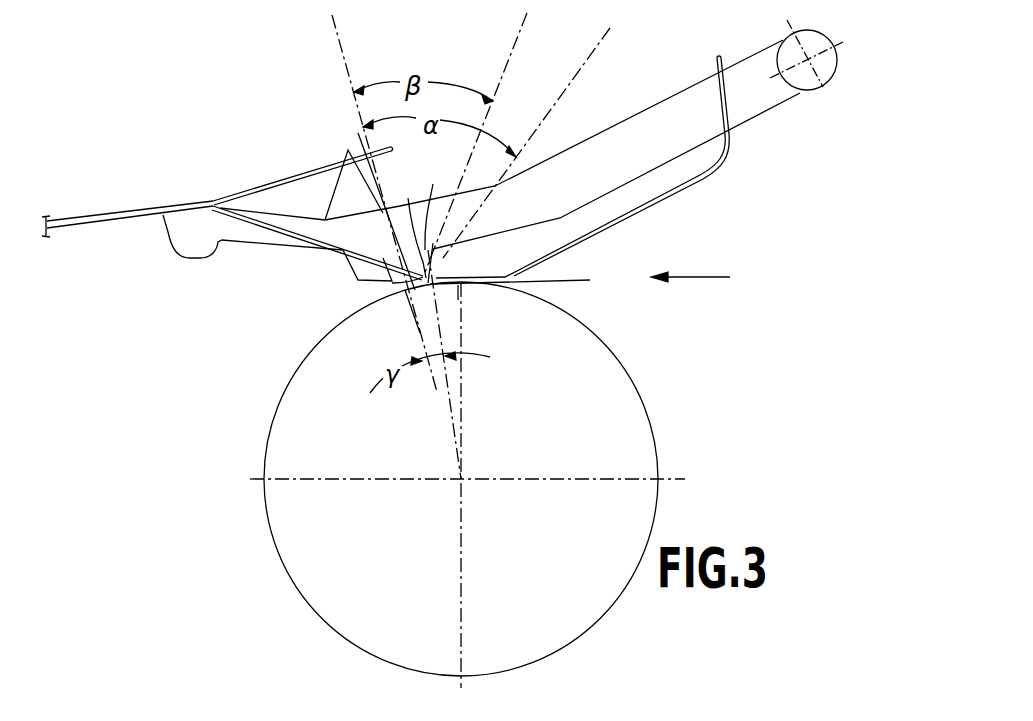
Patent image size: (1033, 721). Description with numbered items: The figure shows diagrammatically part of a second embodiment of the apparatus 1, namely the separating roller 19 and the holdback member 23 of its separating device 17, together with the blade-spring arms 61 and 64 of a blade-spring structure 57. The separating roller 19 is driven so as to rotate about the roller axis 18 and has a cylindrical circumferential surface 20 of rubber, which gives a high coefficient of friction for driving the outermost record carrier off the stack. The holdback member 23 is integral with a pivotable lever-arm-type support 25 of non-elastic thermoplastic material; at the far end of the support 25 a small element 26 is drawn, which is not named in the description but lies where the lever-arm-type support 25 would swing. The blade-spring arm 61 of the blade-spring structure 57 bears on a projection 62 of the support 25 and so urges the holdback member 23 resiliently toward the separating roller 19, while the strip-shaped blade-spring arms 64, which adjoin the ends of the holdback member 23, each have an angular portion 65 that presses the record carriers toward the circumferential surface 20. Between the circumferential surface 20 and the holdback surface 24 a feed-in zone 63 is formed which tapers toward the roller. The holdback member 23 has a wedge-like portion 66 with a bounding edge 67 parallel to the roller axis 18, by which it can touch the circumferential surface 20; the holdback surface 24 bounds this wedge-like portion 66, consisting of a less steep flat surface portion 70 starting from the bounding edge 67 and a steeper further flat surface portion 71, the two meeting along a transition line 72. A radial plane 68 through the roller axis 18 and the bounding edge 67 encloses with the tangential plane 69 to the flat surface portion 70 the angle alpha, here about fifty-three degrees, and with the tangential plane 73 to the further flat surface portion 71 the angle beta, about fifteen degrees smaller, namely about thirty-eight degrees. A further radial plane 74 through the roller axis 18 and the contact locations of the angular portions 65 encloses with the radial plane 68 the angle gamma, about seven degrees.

The apparatus 1 is at (178, 70).
The separating device 17 is at (758, 291).
The roller axis 18 is at (463, 483).
The separating roller 19 is at (467, 485).
The circumferential surface 20 is at (583, 322).
The holdback member 23 is at (360, 238).
The holdback surface 24 is at (440, 262).
The support 25 is at (670, 120).
The pivot axle 26 is at (800, 70).
The blade-spring structure 57 is at (152, 224).
The blade-spring arm 61 is at (358, 133).
The projection 62 is at (347, 160).
The feed-in zone 63 is at (558, 296).
The blade-spring arms 64 is at (703, 177).
The angular portion 65 is at (458, 287).
The wedge-like portion 66 is at (343, 266).
The bounding edge 67 is at (405, 298).
The radial plane 68 is at (345, 46).
The tangential plane 69 is at (598, 53).
The flat surface portion 70 is at (395, 287).
The further flat surface portion 71 is at (434, 205).
The transition line 72 is at (408, 226).
The tangential plane 73 is at (516, 48).
The further radial plane 74 is at (448, 387).